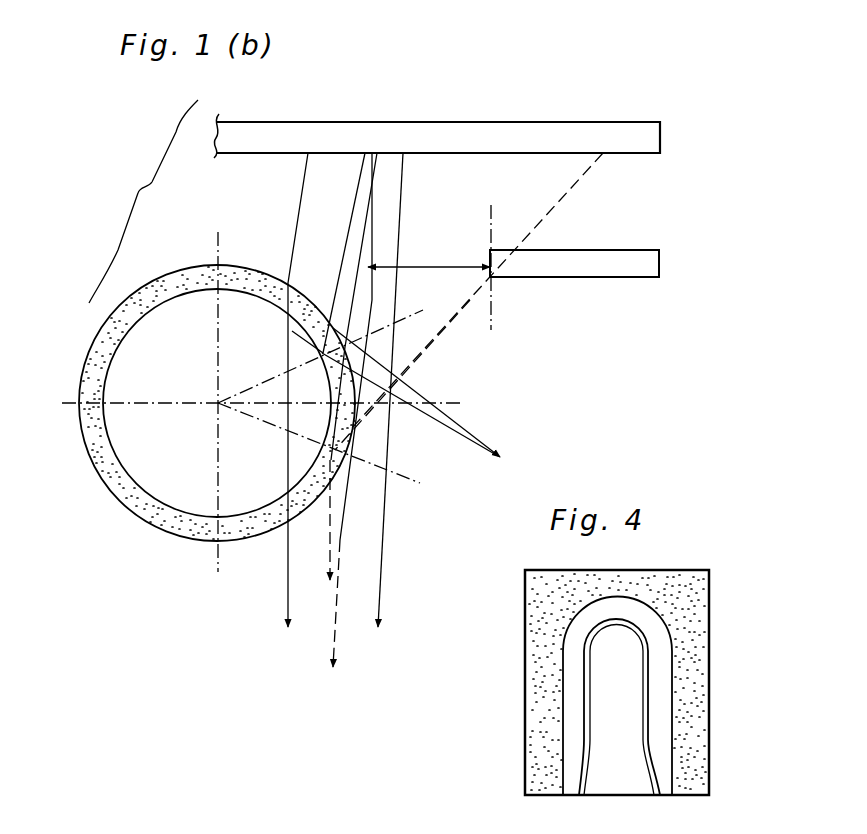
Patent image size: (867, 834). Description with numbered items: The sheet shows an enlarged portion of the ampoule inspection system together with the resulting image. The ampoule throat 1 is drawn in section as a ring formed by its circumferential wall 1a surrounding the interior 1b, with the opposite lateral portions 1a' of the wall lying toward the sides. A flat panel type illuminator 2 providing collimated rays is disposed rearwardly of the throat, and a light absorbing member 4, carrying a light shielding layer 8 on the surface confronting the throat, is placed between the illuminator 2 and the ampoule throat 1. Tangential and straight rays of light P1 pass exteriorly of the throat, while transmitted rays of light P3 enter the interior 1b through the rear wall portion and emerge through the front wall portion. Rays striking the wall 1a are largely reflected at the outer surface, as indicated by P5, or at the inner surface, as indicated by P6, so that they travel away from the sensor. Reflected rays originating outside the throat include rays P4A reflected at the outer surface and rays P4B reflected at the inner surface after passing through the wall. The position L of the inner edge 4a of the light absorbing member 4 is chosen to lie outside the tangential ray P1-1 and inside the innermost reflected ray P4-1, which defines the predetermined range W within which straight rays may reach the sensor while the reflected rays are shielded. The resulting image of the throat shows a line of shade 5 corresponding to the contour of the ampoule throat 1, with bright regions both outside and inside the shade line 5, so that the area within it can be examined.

In FIG. 1B, the ampoule throat 1 is at (132, 513).
In FIG. 1B, the circumferential wall 1a is at (198, 403).
In FIG. 1B, the opposite lateral portions of the wall 1a' is at (275, 459).
In FIG. 1B, the interior of the ampoule throat 1b is at (152, 353).
In FIG. 1B, the flat panel type illuminator 2 is at (660, 123).
In FIG. 1B, the light absorbing member 4 is at (660, 260).
In FIG. 1B, the inner edge 4a is at (523, 277).
In FIG. 1B, the light shielding layer 8 is at (610, 277).
In FIG. 4, the line of shade 5 is at (648, 738).
In FIG. 1B, the predetermined range W is at (435, 266).
In FIG. 1B, the position of the inner edge L is at (493, 312).
In FIG. 1B, the tangential and straight rays of light P1 is at (383, 552).
In FIG. 1B, the tangential ray of light P1-1 is at (372, 237).
In FIG. 1B, the transmitted rays of light P3 is at (268, 600).
In FIG. 1B, the innermost reflected ray of light P4-1 is at (560, 202).
In FIG. 1B, the rays of light reflected at the outer surface P4A is at (337, 670).
In FIG. 1B, the rays of light reflected at the inner surface P4B is at (330, 583).
In FIG. 1B, the rays of light reflected at the outer surface P5 is at (447, 420).
In FIG. 1B, the rays of light reflected at the inner surface P6 is at (430, 418).